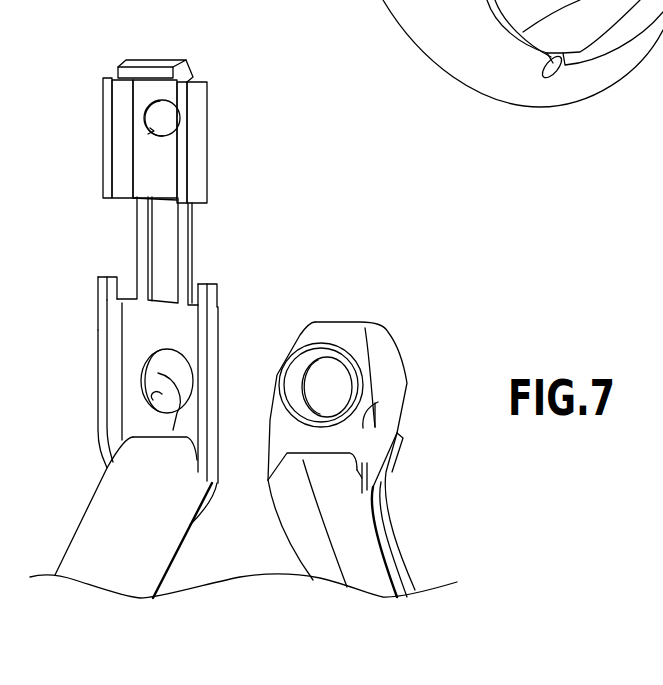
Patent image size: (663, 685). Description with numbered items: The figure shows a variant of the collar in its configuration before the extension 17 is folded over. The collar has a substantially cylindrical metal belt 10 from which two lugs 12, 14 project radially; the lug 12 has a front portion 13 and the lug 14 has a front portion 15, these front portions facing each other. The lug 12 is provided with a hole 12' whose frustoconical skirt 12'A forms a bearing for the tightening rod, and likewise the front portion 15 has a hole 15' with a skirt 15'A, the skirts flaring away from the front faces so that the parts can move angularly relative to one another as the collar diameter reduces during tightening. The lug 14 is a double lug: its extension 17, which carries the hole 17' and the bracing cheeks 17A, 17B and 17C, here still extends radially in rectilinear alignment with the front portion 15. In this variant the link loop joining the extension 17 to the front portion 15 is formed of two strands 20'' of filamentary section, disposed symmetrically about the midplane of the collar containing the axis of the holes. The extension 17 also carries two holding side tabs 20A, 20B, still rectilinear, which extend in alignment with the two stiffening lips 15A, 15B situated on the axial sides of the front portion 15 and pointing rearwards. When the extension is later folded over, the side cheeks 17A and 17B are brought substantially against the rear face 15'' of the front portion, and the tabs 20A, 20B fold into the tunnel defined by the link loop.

The metal belt 10 is at (394, 501).
The lug 12 is at (375, 429).
The hole 12' is at (327, 344).
The skirt 12'A is at (381, 385).
The front portion 13 is at (377, 405).
The lug 14 is at (222, 199).
The front portion 15 is at (163, 424).
The stiffening lip 15A is at (212, 383).
The stiffening lip 15B is at (102, 317).
The hole 15' is at (120, 387).
The rear face 15'' is at (123, 381).
The skirt 15'A is at (153, 436).
The extension 17 is at (175, 106).
The bracing cheek 17A is at (193, 127).
The bracing cheek 17B is at (108, 104).
The bracing cheek 17C is at (150, 62).
The hole 17' is at (117, 131).
The strands 20'' is at (137, 250).
The holding side tab 20A is at (200, 285).
The holding side tab 20B is at (105, 278).